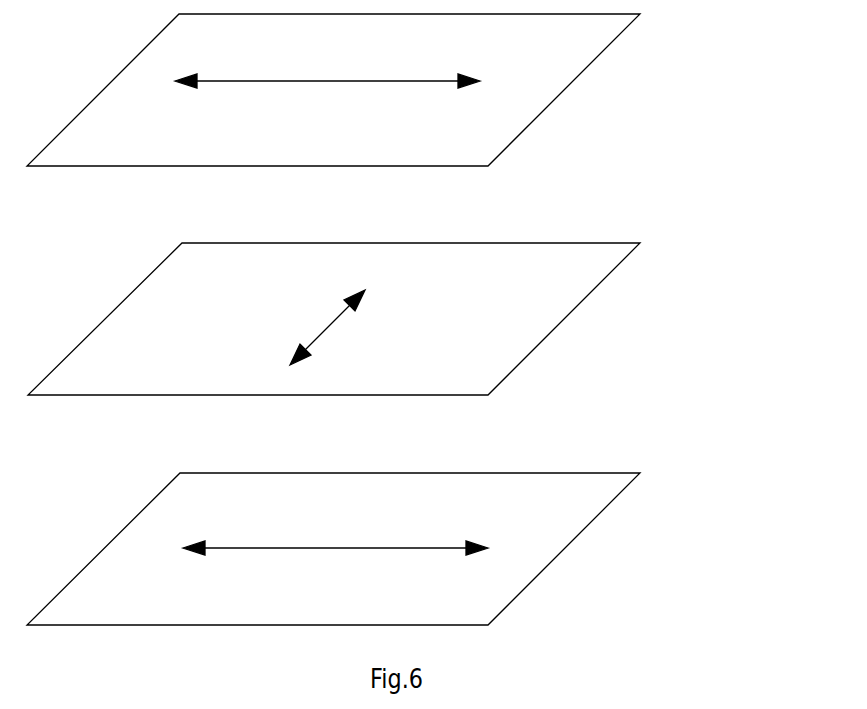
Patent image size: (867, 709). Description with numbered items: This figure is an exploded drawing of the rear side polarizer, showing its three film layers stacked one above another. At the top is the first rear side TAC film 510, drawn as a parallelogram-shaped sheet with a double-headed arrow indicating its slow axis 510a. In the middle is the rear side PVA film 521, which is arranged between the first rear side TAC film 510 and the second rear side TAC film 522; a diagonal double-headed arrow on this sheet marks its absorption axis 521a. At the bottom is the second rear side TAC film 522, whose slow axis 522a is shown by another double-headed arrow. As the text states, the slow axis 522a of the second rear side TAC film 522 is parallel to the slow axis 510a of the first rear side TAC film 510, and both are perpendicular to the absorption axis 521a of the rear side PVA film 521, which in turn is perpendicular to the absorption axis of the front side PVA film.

The first rear side TAC film 510 is at (610, 44).
The slow axis of the first rear side TAC film 510a is at (390, 82).
The rear side PVA film 521 is at (602, 280).
The absorption axis of the rear side PVA film 521a is at (330, 324).
The second rear side TAC film 522 is at (592, 522).
The slow axis of the second rear side TAC film 522a is at (335, 548).